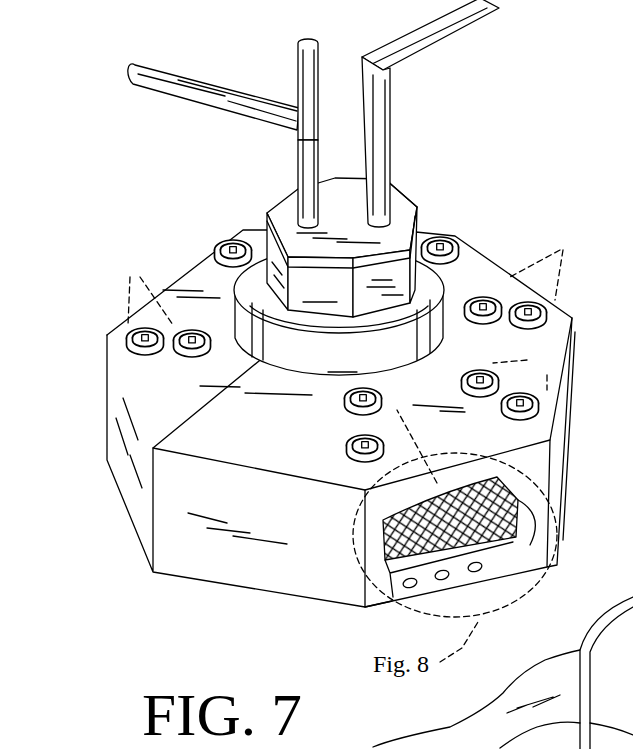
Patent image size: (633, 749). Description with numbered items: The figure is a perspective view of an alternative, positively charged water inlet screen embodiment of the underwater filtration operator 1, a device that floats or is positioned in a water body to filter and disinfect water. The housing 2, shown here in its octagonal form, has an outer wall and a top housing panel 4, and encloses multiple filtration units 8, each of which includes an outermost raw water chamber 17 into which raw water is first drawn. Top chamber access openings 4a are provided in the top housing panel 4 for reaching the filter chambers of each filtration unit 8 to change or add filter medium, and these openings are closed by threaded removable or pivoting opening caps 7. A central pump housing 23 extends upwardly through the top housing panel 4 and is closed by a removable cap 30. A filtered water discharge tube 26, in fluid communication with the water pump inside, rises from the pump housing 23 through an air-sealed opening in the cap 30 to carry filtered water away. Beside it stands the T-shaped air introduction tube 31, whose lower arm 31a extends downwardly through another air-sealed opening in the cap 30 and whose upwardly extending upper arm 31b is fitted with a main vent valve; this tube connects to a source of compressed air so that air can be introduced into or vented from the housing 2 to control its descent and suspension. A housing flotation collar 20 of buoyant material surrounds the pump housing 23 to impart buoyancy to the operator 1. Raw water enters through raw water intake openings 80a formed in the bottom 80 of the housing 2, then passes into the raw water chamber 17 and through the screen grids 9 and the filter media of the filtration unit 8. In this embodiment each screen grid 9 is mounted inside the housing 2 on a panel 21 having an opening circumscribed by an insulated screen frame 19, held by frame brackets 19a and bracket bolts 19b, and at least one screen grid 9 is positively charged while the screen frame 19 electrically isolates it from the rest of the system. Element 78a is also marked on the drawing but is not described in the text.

The underwater filtration operator 1 is at (148, 212).
The housing 2 is at (100, 372).
The top housing panel 4 is at (455, 518).
The top chamber access openings 4a is at (349, 358).
The opening caps 7 is at (233, 240).
The filtration units 8 is at (100, 426).
The screen grid 9 is at (513, 497).
The raw water chamber 17 is at (176, 400).
The screen frame 19 is at (458, 578).
The frame brackets 19a is at (583, 673).
The bracket bolts 19b is at (503, 699).
The housing flotation collar 20 is at (339, 311).
The panel 21 is at (523, 523).
The pump housing 23 is at (342, 247).
The filtered water discharge tube 26 is at (375, 125).
The removable cap 30 is at (410, 200).
The air introduction tube 31 is at (192, 88).
The lower arm 31a is at (312, 142).
The upper arm 31b is at (300, 72).
The slot 78a is at (408, 591).
The bottom 80 is at (378, 583).
The raw water intake openings 80a is at (476, 574).